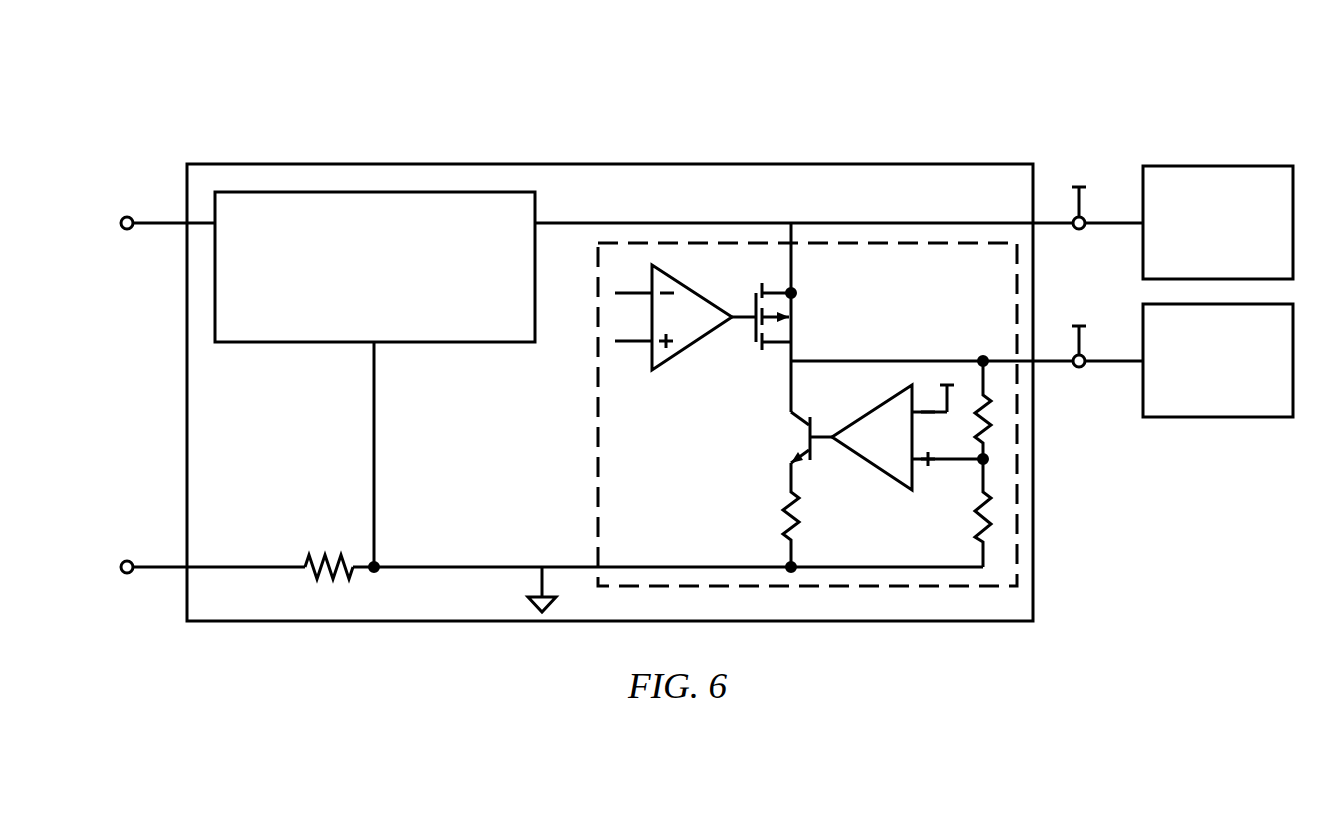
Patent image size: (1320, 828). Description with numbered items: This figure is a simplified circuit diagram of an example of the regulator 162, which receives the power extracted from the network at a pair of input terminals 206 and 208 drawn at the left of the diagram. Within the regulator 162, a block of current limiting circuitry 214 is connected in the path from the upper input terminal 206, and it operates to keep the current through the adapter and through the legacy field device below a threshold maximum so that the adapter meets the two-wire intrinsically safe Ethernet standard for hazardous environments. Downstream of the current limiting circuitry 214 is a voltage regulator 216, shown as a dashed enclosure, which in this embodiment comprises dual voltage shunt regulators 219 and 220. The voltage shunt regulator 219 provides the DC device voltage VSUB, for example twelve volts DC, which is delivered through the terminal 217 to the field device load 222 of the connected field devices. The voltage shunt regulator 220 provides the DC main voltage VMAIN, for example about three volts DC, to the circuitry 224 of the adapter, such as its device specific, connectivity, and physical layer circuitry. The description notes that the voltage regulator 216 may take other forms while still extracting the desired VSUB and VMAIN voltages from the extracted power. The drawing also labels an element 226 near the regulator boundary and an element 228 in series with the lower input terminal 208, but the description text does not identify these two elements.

The regulator 162 is at (208, 95).
The terminal 206 is at (127, 217).
The terminal 208 is at (127, 573).
The current limiting circuitry 214 is at (222, 318).
The voltage regulator 216 is at (598, 513).
The terminal 217 is at (1079, 229).
The voltage shunt regulator 219 is at (723, 253).
The voltage shunt regulator 220 is at (890, 548).
The field device load 222 is at (1255, 166).
The circuitry of the adapter 224 is at (1252, 417).
The circuit housing boundary 226 is at (225, 400).
The sense resistor 228 is at (312, 556).